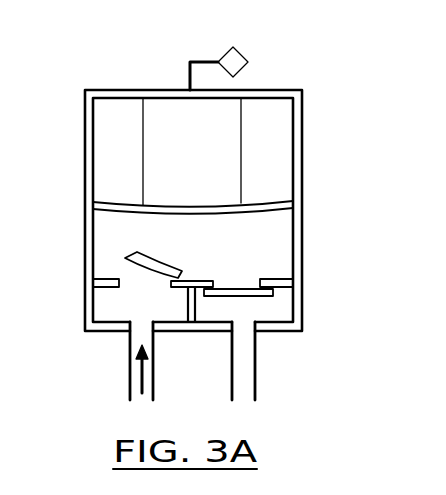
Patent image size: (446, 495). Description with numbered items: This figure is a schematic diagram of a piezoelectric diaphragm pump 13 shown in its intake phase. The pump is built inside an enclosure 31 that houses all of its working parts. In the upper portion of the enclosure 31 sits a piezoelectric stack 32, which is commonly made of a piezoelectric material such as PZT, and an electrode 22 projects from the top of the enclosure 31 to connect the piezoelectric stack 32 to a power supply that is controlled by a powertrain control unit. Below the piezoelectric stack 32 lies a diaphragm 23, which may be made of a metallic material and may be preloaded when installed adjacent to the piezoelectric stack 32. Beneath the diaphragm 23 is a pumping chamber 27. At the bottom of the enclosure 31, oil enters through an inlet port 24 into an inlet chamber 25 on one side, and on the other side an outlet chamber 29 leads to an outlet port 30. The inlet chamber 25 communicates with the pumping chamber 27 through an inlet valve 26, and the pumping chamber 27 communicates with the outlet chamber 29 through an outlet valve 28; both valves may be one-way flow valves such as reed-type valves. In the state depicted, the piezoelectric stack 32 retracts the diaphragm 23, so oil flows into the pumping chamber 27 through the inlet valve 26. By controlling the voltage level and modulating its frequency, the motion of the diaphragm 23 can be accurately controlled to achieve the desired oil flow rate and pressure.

The piezoelectric diaphragm pump 13 is at (341, 107).
The electrode 22 is at (188, 77).
The diaphragm 23 is at (172, 207).
The inlet port 24 is at (127, 368).
The inlet chamber 25 is at (107, 305).
The inlet valve 26 is at (130, 250).
The pumping chamber 27 is at (265, 235).
The outlet valve 28 is at (235, 290).
The outlet chamber 29 is at (276, 308).
The outlet port 30 is at (258, 374).
The enclosure 31 is at (283, 90).
The piezoelectric stack 32 is at (215, 155).